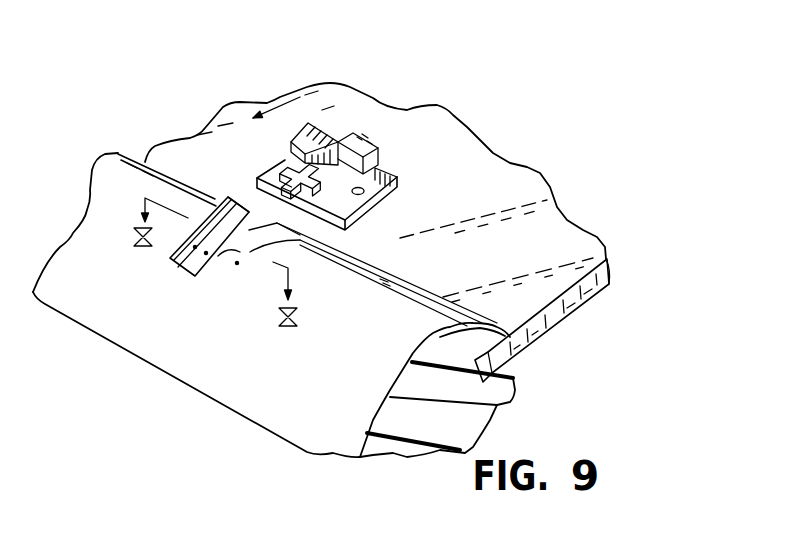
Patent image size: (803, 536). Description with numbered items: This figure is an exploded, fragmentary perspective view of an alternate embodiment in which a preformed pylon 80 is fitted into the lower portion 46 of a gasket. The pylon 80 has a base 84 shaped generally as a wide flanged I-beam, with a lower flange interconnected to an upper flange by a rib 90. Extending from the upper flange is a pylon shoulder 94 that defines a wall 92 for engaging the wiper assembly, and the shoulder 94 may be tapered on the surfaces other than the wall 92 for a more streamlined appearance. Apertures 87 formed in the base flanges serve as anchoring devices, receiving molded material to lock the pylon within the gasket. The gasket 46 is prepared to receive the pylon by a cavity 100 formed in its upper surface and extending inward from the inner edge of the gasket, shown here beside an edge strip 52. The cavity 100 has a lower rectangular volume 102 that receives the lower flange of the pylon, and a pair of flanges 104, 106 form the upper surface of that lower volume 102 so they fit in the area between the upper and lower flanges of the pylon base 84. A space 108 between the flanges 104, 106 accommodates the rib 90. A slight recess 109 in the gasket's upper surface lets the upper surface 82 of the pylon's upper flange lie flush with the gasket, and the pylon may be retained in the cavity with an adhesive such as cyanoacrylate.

The lower portion of gasket 46 is at (319, 270).
The edge strip 52 is at (495, 326).
The preformed pylon 80 is at (382, 141).
The upper surface of pylon base 82 is at (357, 135).
The pylon base 84 is at (413, 190).
The apertures 87 is at (362, 187).
The rib 90 is at (332, 243).
The wall 92 is at (327, 109).
The pylon shoulder 94 is at (298, 143).
The cavity 100 is at (196, 229).
The lower rectangular volume 102 is at (250, 250).
The flange 104 is at (239, 204).
The flange 106 is at (220, 258).
The space 108 is at (187, 280).
The recess 109 is at (212, 250).